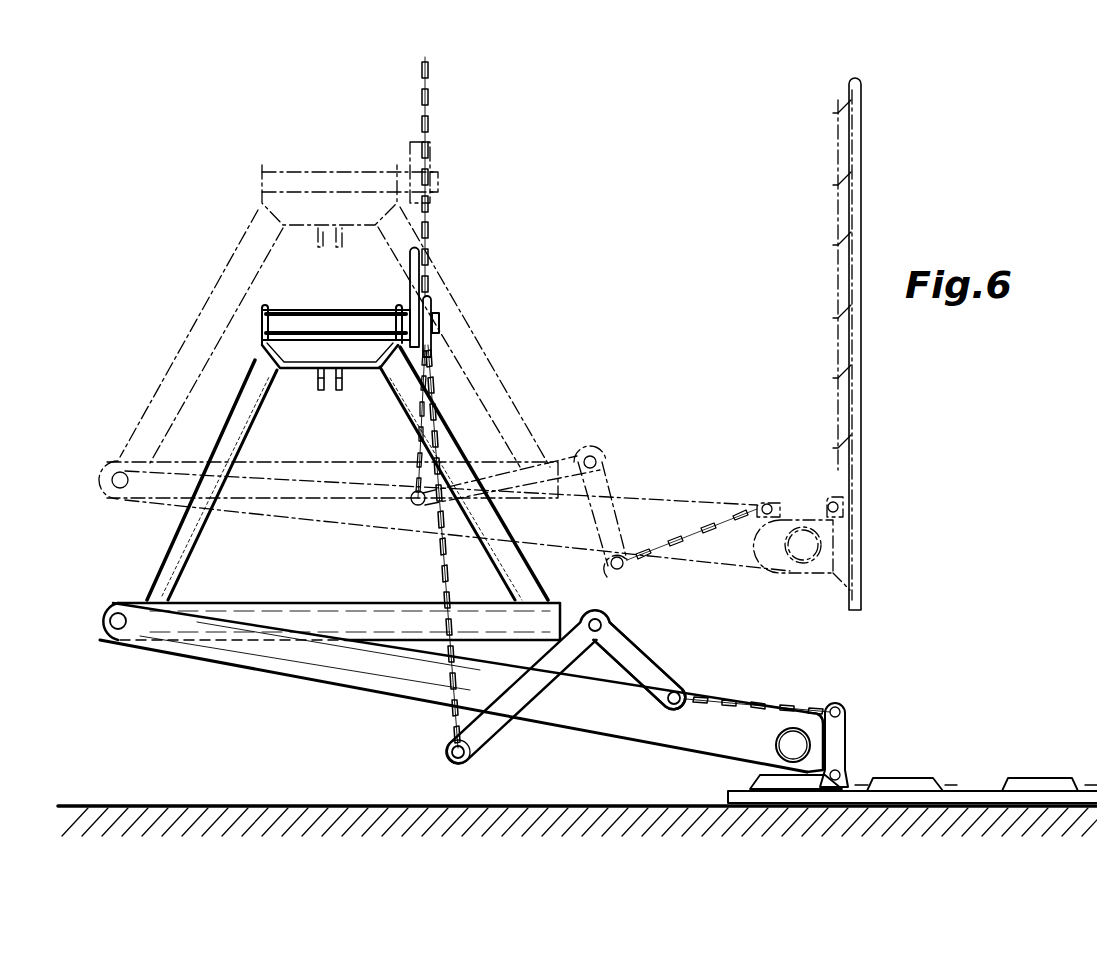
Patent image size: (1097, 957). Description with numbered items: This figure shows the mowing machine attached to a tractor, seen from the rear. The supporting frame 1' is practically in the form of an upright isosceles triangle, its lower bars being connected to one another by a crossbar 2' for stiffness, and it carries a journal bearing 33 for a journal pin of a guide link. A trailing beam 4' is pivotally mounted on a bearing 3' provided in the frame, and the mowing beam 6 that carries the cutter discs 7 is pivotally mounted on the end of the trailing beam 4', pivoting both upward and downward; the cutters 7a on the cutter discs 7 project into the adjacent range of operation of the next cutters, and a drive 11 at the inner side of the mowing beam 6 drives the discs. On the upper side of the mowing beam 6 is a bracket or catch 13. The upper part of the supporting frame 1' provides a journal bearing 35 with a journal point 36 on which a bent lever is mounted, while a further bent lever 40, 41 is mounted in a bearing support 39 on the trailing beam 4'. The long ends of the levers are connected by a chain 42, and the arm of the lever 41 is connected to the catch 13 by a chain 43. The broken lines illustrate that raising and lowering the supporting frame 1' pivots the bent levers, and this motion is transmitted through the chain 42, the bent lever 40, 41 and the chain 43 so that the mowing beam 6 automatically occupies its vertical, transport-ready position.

The supporting frame 1' is at (192, 480).
The crossbar 2' is at (339, 662).
The bearing 3' is at (114, 656).
The trailing beam 4' is at (461, 687).
The mowing beam 6 is at (978, 798).
The cutter discs 7 is at (1040, 782).
The cutters 7a is at (948, 781).
The drive 11 is at (800, 717).
The bracket or catch 13 is at (845, 722).
The journal bearing 33 is at (340, 392).
The journal bearing 35 is at (265, 358).
The journal point 36 is at (439, 322).
The bearing support 39 is at (593, 667).
The bent lever 40 is at (478, 742).
The bent lever arm 41 is at (650, 675).
The chain 42 is at (440, 412).
The chain 43 is at (756, 702).